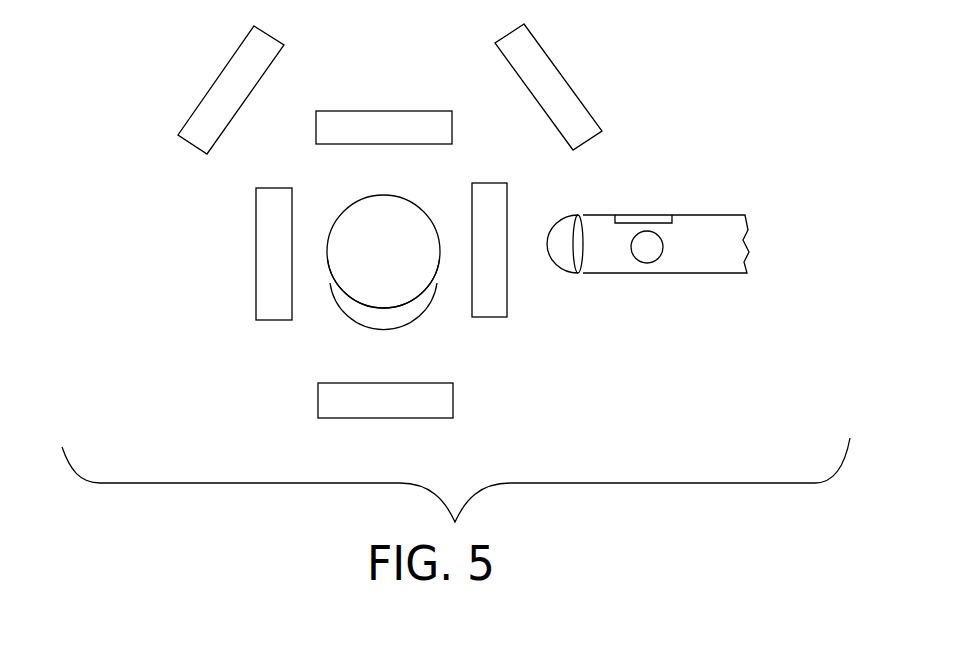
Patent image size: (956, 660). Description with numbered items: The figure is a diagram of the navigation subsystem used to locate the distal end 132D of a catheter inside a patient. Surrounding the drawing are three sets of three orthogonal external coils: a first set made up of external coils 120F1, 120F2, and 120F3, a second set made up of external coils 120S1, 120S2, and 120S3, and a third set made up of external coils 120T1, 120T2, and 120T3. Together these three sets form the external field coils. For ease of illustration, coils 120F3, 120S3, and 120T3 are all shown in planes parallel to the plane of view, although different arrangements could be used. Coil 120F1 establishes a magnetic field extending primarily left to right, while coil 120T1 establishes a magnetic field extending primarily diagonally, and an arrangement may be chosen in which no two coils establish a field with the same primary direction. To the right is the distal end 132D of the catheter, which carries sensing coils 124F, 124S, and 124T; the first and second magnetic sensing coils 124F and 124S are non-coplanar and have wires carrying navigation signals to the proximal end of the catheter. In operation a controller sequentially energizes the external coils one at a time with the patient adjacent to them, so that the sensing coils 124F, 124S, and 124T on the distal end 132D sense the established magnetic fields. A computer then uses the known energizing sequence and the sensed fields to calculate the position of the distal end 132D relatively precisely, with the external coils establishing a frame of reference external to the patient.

The external coil 120T1 is at (208, 87).
The external coil 120F2 is at (366, 110).
The external coil 120T2 is at (557, 66).
The external coil 120S2 is at (507, 200).
The external coil 120F1 is at (257, 247).
The external coil 120F3 is at (333, 260).
The external coil 120S3 is at (415, 305).
The external coil 120T3 is at (418, 326).
The external coil 120S1 is at (373, 420).
The distal end of the catheter 132D is at (697, 258).
The first magnetic sensing coil 124F is at (577, 247).
The sensing coil 124T is at (642, 213).
The second magnetic sensing coil 124S is at (648, 258).